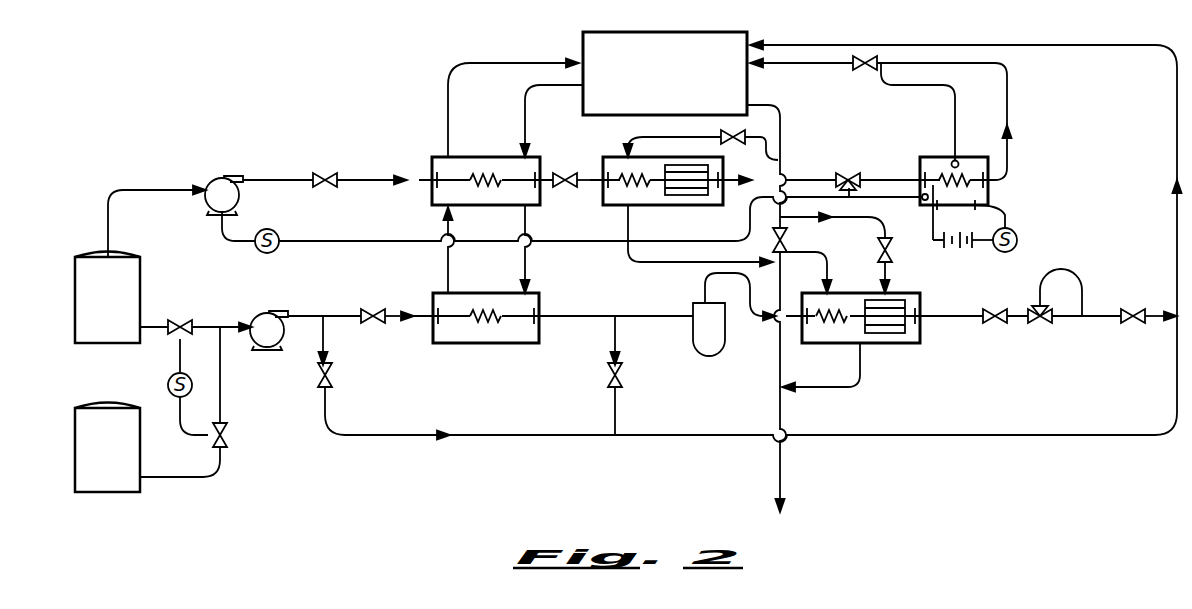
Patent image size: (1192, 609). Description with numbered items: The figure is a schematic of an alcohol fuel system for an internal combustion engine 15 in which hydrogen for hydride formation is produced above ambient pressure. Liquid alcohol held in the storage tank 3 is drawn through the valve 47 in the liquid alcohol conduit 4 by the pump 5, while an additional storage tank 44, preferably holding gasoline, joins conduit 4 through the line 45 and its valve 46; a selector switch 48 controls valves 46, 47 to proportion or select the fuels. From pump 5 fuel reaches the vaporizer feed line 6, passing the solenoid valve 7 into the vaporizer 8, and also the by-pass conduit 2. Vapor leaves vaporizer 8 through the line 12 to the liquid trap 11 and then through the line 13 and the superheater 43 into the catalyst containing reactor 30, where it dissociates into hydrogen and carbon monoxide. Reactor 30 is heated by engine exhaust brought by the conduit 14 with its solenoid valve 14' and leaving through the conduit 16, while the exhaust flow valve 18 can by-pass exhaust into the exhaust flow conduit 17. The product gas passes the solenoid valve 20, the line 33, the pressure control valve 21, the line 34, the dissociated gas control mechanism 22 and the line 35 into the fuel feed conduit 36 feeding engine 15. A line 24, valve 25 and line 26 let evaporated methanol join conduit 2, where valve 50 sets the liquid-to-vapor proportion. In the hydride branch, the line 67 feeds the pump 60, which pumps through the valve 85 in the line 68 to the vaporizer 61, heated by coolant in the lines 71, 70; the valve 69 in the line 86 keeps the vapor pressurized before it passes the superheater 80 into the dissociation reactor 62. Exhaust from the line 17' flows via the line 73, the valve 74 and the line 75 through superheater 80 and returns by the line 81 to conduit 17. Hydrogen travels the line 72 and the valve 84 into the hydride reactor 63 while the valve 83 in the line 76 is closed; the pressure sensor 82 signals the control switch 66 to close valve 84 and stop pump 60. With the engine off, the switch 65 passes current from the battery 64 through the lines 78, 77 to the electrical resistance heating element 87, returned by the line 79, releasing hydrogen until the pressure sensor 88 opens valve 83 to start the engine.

The by-pass conduit 2 is at (505, 437).
The liquid alcohol storage tank 3 is at (118, 303).
The liquid alcohol conduit 4 is at (208, 322).
The pump 5 is at (272, 350).
The vaporizer feed line 6 is at (318, 315).
The solenoid valve 7 is at (372, 310).
The vaporizer 8 is at (514, 340).
The liquid trap 11 is at (717, 332).
The line 12 is at (637, 317).
The line 13 is at (752, 320).
The conduit 14 is at (835, 253).
The solenoid valve 14' is at (861, 251).
The internal combustion engine 15 is at (672, 77).
The conduit 16 is at (835, 390).
The exhaust flow conduit 17 is at (754, 308).
The line 17' is at (762, 243).
The exhaust flow valve 18 is at (788, 253).
The solenoid valve 20 is at (996, 326).
The pressure control valve 21 is at (1042, 327).
The dissociated gas control mechanism 22 is at (1135, 327).
The line 24 is at (605, 348).
The valve 25 is at (628, 375).
The line 26 is at (605, 408).
The catalyst containing reactor 30 is at (882, 340).
The line 33 is at (1010, 313).
The line 34 is at (1106, 314).
The line 35 is at (1158, 313).
The fuel feed conduit 36 is at (1068, 42).
The superheater 43 is at (830, 333).
The additional storage tank 44 is at (122, 451).
The line 45 is at (175, 480).
The valve 46 is at (232, 435).
The valve 47 is at (178, 320).
The selector switch 48 is at (168, 382).
The valve 50 is at (333, 373).
The pump 60 is at (225, 180).
The vaporizer 61 is at (514, 203).
The dissociation reactor 62 is at (684, 198).
The hydride reactor 63 is at (990, 192).
The battery 64 is at (957, 252).
The switch 65 is at (1018, 241).
The control switch 66 is at (280, 233).
The line 67 is at (170, 185).
The line 68 is at (377, 178).
The valve 69 is at (508, 249).
The line 70 is at (445, 88).
The line 71 is at (522, 103).
The line 72 is at (800, 178).
The line 73 is at (764, 148).
The valve 74 is at (725, 135).
The line 75 is at (645, 136).
The line 76 is at (1010, 98).
The line 77 is at (1003, 217).
The line 78 is at (985, 247).
The line 79 is at (932, 240).
The superheater 80 is at (630, 205).
The line 81 is at (680, 268).
The pressure sensor 82 is at (927, 203).
The valve 83 is at (860, 70).
The valve 84 is at (849, 172).
The valve 85 is at (322, 173).
The line 86 is at (583, 175).
The electrical resistance heating element 87 is at (960, 172).
The pressure sensor 88 is at (950, 162).